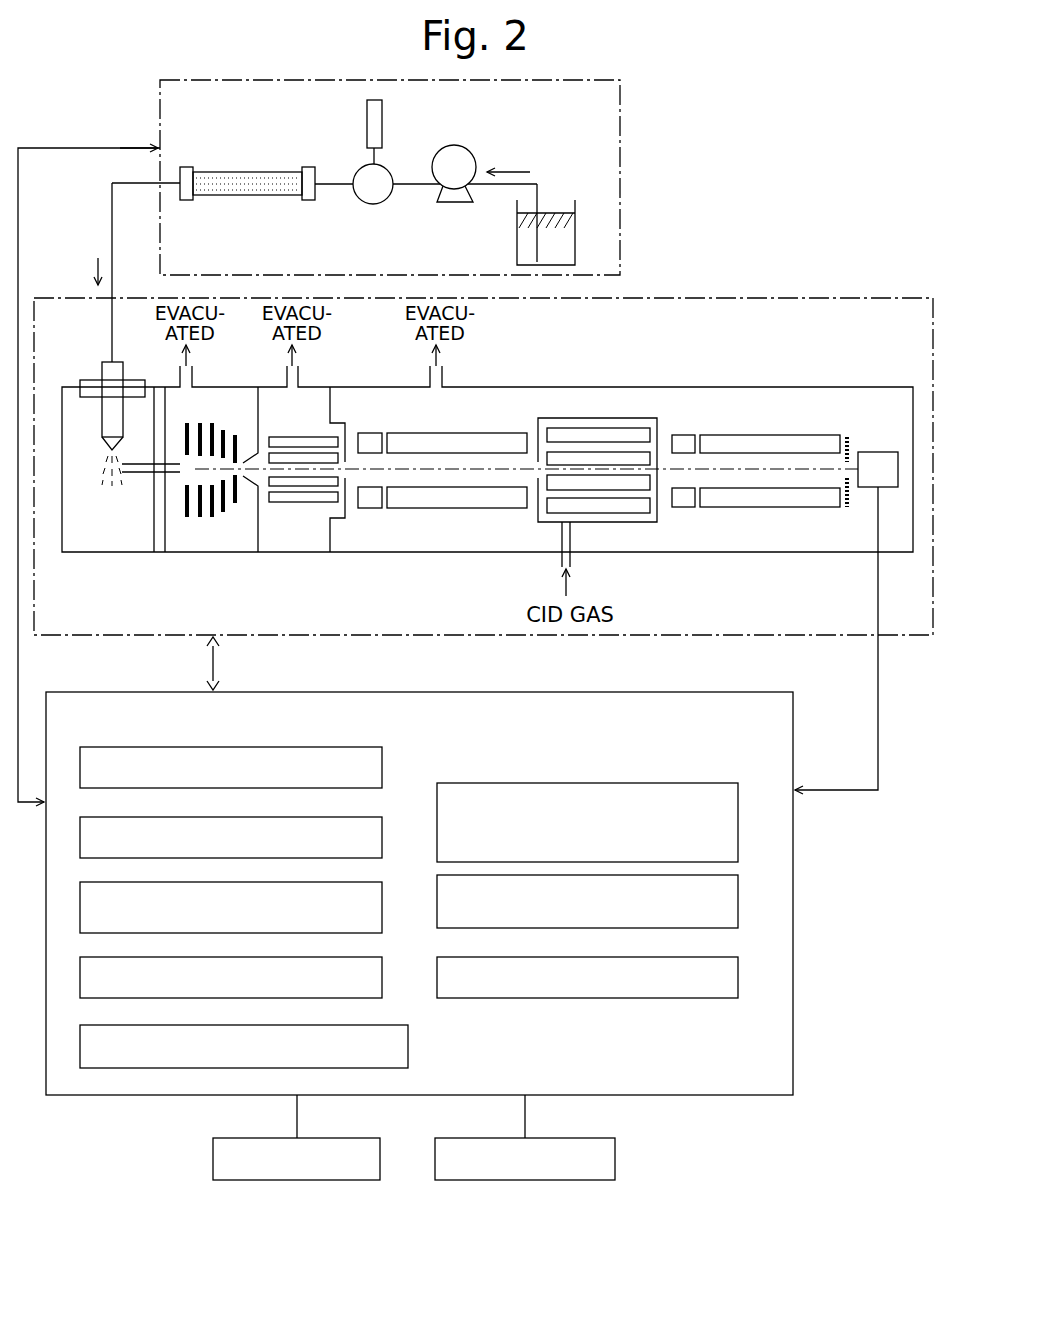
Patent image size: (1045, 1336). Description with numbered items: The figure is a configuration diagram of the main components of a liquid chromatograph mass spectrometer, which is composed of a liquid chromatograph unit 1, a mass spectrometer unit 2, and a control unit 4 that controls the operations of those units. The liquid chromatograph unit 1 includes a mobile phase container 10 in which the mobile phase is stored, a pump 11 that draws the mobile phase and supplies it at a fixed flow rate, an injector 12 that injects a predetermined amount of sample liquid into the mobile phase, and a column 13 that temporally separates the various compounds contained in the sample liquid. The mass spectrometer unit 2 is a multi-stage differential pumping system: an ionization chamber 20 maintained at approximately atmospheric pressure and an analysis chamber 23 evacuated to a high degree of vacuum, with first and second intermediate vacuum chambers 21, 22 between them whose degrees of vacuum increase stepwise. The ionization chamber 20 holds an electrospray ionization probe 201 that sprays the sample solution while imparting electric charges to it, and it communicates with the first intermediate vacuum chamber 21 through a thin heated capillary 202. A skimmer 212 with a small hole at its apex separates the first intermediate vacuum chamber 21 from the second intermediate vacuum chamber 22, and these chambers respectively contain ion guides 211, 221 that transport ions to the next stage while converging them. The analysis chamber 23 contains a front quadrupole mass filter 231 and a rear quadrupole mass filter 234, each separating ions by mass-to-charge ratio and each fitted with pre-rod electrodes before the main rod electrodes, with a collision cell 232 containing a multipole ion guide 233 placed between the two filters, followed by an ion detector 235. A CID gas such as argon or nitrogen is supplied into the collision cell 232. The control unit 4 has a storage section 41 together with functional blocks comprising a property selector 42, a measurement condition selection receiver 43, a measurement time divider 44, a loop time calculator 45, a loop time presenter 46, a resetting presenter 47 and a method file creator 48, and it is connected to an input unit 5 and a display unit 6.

The liquid chromatograph unit 1 is at (622, 110).
The mobile phase container 10 is at (576, 238).
The pump 11 is at (457, 203).
The injector 12 is at (380, 204).
The column 13 is at (265, 200).
The mass spectrometer unit 2 is at (781, 290).
The ionization chamber 20 is at (98, 542).
The electrospray ionization probe 201 is at (92, 380).
The heated capillary 202 is at (140, 475).
The first intermediate vacuum chamber 21 is at (182, 542).
The ion guide 211 is at (222, 423).
The skimmer 212 is at (252, 482).
The second intermediate vacuum chamber 22 is at (275, 542).
The ion guide 221 is at (308, 437).
The analysis chamber 23 is at (408, 540).
The front quadrupole mass filter 231 is at (475, 433).
The collision cell 232 is at (617, 418).
The multipole ion guide 233 is at (565, 428).
The rear quadrupole mass filter 234 is at (762, 435).
The ion detector 235 is at (880, 452).
The control unit 4 is at (795, 762).
The storage section 41 is at (383, 768).
The property selector 42 is at (383, 838).
The measurement condition selection receiver 43 is at (740, 818).
The measurement time divider 44 is at (383, 907).
The loop time calculator 45 is at (740, 897).
The loop time presenter 46 is at (383, 975).
The resetting presenter 47 is at (740, 975).
The method file creator 48 is at (410, 1052).
The input unit 5 is at (381, 1157).
The display unit 6 is at (616, 1158).